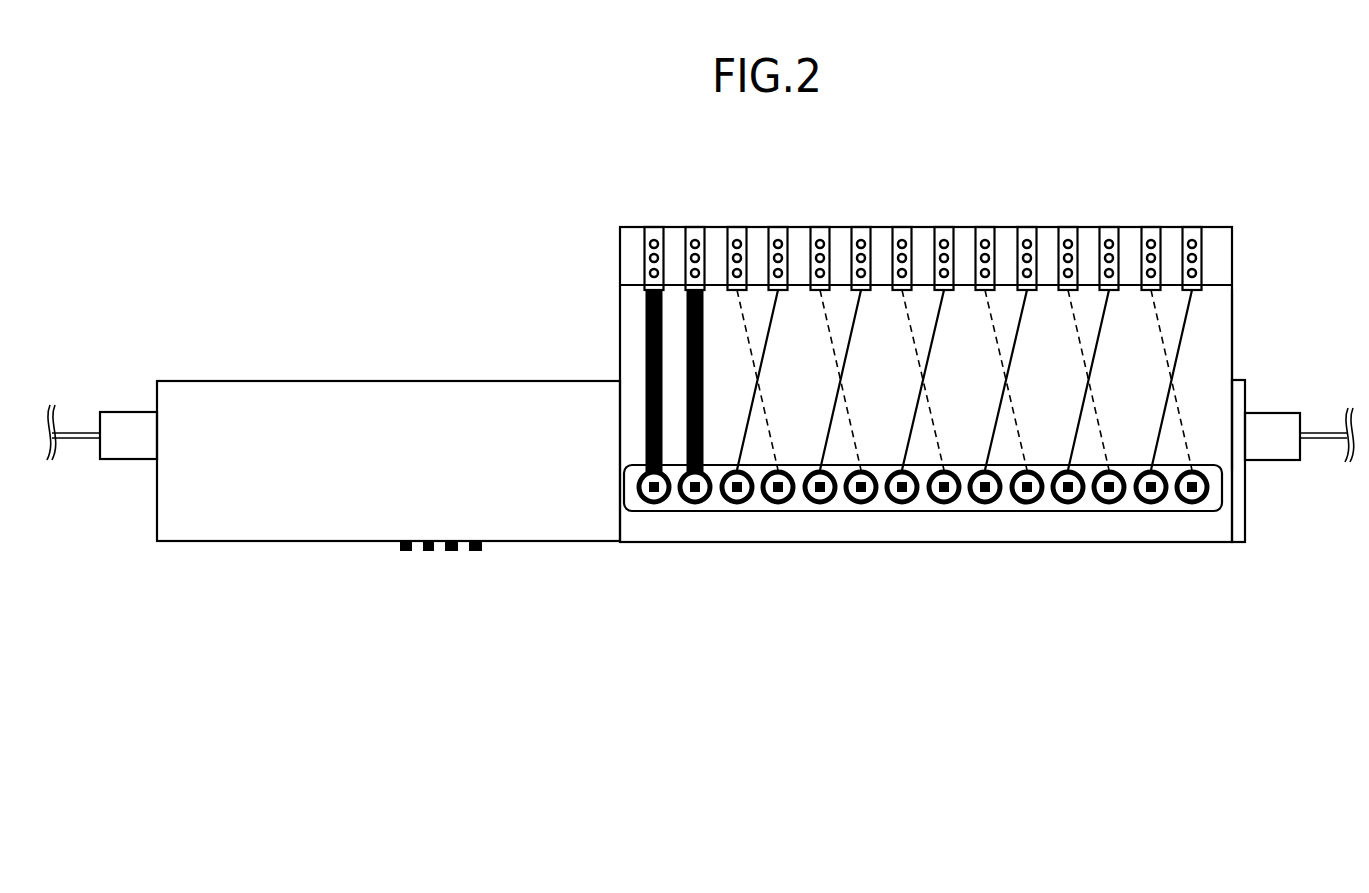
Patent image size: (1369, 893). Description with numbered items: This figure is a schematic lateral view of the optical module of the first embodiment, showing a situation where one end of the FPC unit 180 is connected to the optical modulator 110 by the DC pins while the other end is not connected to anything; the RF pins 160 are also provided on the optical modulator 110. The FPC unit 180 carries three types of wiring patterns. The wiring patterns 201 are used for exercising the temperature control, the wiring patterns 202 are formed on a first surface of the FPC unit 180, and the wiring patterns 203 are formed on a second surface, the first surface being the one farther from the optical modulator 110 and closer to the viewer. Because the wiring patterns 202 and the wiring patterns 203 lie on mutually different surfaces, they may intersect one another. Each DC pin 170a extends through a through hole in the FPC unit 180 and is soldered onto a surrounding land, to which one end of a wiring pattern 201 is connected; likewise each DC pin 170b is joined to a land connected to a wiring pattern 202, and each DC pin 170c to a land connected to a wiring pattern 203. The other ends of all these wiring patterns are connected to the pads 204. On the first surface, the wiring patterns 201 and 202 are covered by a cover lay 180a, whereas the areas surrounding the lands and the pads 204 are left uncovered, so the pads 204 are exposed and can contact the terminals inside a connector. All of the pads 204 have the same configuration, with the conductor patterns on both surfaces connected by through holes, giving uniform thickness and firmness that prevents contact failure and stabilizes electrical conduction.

The optical modulator 110 is at (213, 380).
The Radio Frequency (RF) pins 160 is at (488, 549).
The DC pin 170a is at (675, 546).
The DC pin 170b is at (944, 527).
The DC pin 170c is at (985, 546).
The Flexible Printed Circuits (FPC) unit 180 is at (1254, 240).
The cover lay 180a is at (1232, 313).
The wiring patterns 201 is at (645, 317).
The wiring patterns 202 is at (762, 357).
The wiring patterns 203 is at (762, 400).
The pad 204 is at (653, 227).